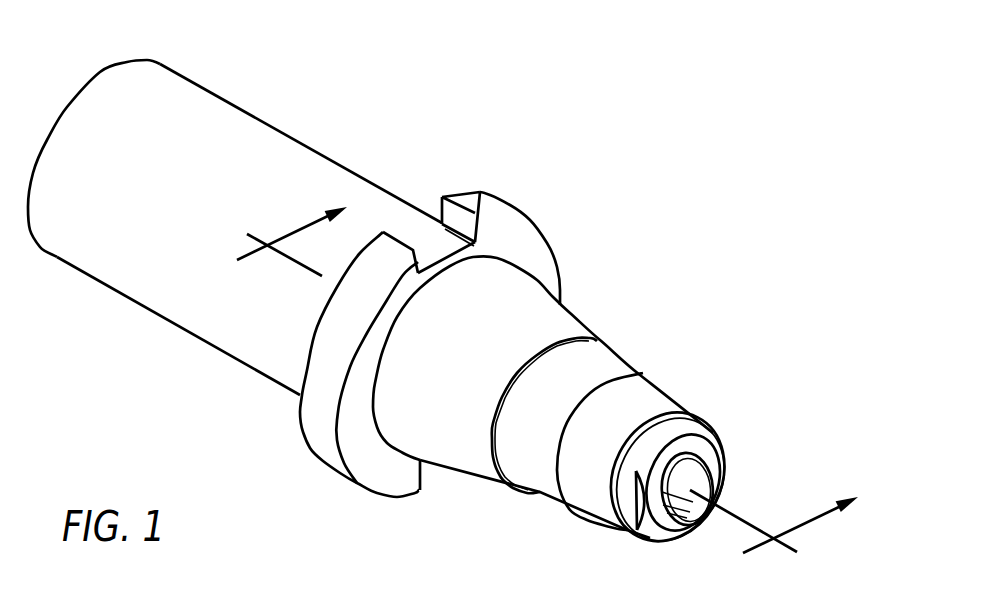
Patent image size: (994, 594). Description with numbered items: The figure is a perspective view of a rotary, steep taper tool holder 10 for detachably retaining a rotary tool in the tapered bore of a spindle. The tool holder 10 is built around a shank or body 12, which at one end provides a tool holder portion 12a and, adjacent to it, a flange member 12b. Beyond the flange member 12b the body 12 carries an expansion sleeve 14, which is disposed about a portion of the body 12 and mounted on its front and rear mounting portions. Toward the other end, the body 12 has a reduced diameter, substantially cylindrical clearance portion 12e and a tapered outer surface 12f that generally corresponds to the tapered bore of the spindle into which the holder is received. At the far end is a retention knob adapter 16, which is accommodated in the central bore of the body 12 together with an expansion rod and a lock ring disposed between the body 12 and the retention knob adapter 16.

The rotary tapered tool holder 10 is at (706, 132).
The shank or body 12 is at (274, 112).
The tool holder portion 12a is at (187, 97).
The flange member 12b is at (520, 236).
The clearance portion 12e is at (613, 372).
The tapered outer surface 12f is at (660, 404).
The expansion sleeve 14 is at (580, 310).
The retention knob adapter 16 is at (731, 462).